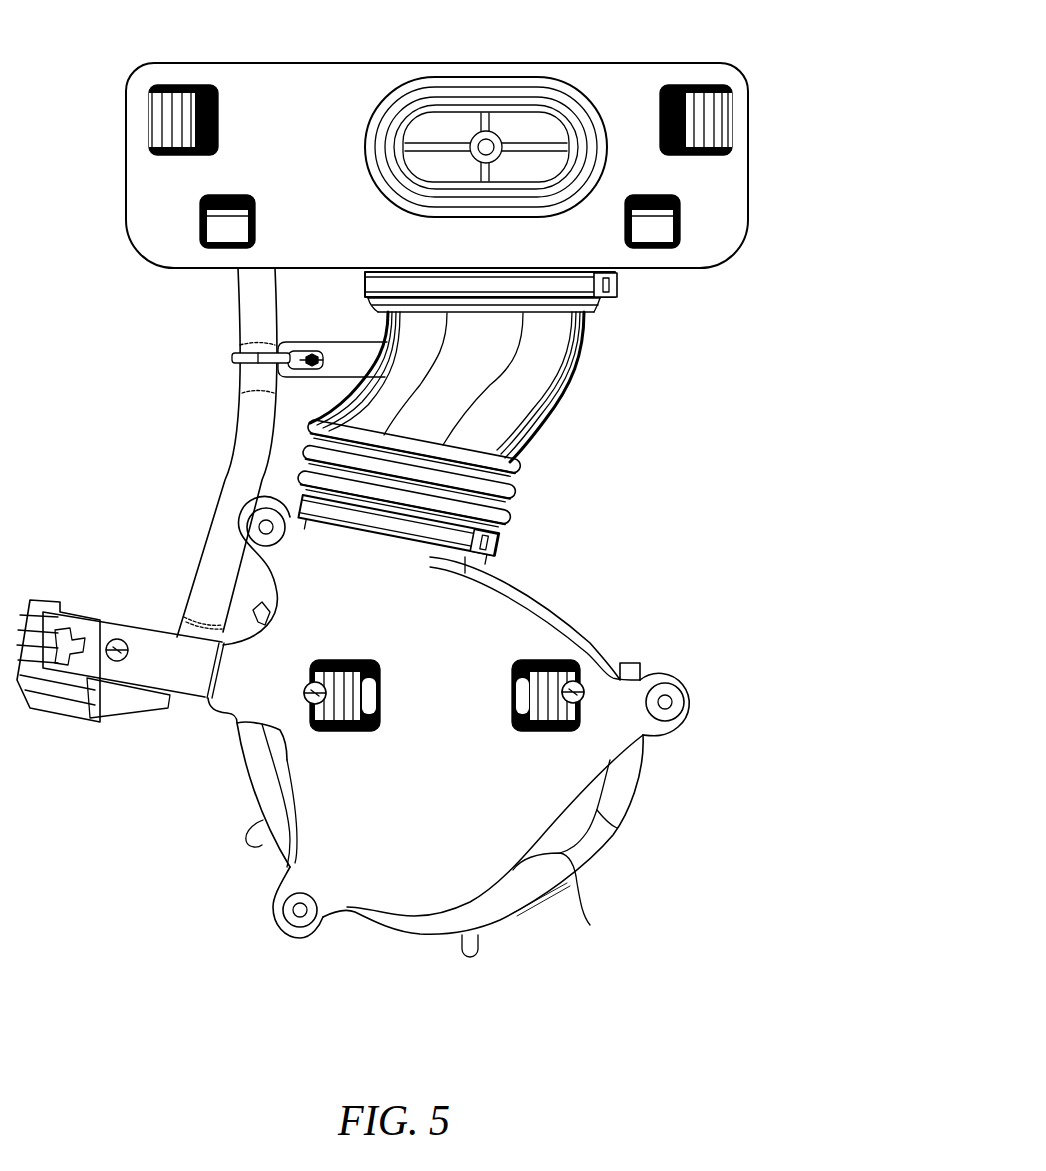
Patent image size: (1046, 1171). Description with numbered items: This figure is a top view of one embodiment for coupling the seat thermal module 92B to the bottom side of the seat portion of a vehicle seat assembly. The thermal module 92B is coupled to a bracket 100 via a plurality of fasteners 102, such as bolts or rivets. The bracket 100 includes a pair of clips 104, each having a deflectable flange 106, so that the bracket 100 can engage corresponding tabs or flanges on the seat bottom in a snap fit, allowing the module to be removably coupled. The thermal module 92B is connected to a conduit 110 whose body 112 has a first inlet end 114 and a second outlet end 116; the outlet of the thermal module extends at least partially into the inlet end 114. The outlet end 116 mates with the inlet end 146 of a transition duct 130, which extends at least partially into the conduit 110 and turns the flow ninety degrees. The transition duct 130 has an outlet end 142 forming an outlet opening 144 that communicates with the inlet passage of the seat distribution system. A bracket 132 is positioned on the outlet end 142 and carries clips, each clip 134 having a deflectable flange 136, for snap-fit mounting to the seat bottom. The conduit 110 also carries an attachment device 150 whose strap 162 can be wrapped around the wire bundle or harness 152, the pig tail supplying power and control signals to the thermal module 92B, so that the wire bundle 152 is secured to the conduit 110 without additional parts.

The seat thermal module 92B is at (409, 727).
The bracket 100 is at (590, 925).
The fasteners 102 is at (255, 517).
The clips 104 is at (498, 684).
The deflectable flange 106 is at (345, 733).
The conduit 110 is at (510, 389).
The body 112 is at (548, 405).
The inlet end 114 is at (398, 530).
The outlet end 116 is at (603, 311).
The transition duct 130 is at (484, 215).
The bracket 132 is at (750, 240).
The clip 134 is at (690, 210).
The deflectable flange 136 is at (717, 117).
The outlet end 142 is at (548, 287).
The outlet opening 144 is at (572, 140).
The inlet end 146 is at (620, 285).
The attachment device 150 is at (297, 330).
The wire bundle or harness 152 is at (220, 320).
The strap 162 is at (232, 356).